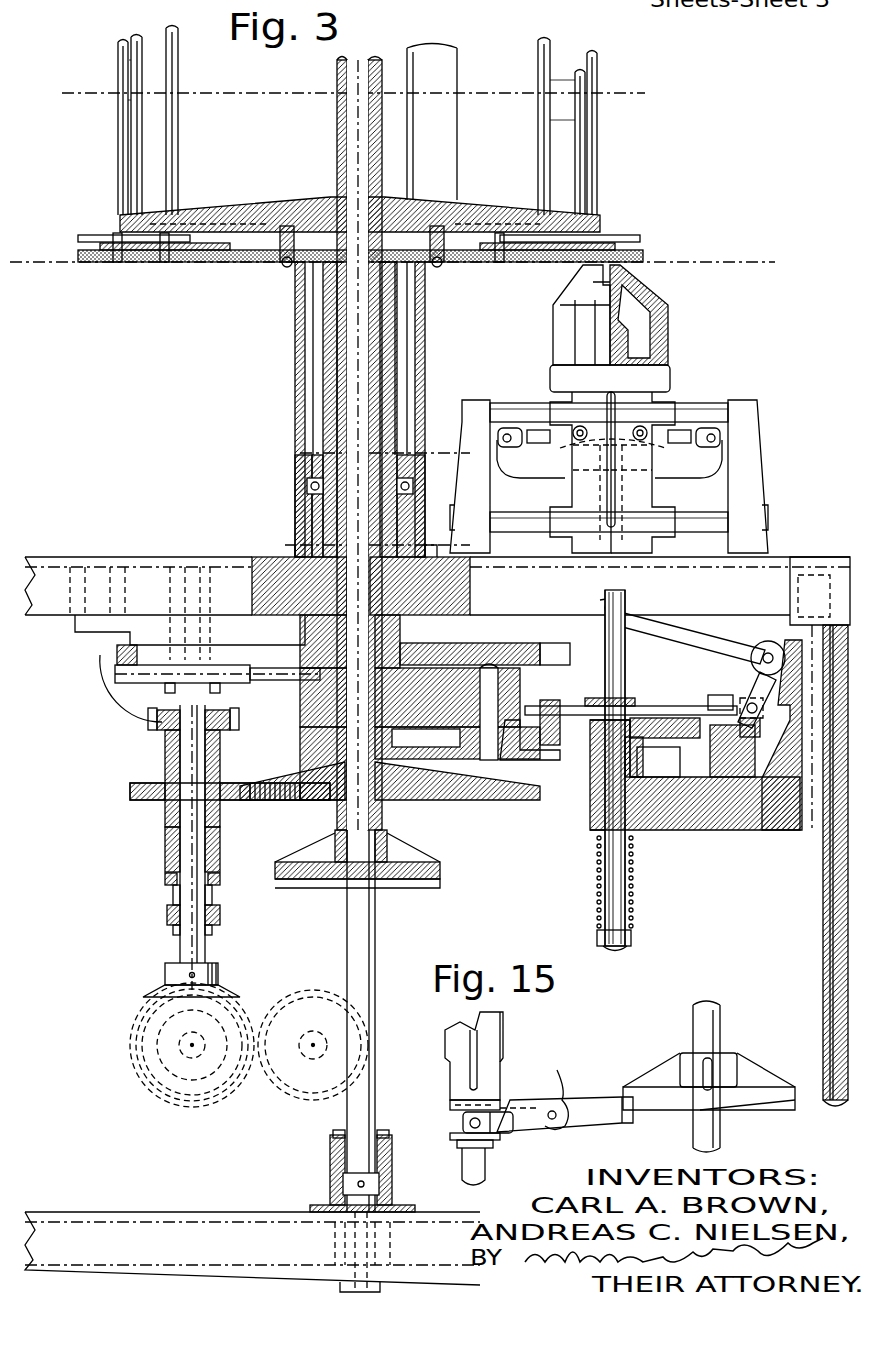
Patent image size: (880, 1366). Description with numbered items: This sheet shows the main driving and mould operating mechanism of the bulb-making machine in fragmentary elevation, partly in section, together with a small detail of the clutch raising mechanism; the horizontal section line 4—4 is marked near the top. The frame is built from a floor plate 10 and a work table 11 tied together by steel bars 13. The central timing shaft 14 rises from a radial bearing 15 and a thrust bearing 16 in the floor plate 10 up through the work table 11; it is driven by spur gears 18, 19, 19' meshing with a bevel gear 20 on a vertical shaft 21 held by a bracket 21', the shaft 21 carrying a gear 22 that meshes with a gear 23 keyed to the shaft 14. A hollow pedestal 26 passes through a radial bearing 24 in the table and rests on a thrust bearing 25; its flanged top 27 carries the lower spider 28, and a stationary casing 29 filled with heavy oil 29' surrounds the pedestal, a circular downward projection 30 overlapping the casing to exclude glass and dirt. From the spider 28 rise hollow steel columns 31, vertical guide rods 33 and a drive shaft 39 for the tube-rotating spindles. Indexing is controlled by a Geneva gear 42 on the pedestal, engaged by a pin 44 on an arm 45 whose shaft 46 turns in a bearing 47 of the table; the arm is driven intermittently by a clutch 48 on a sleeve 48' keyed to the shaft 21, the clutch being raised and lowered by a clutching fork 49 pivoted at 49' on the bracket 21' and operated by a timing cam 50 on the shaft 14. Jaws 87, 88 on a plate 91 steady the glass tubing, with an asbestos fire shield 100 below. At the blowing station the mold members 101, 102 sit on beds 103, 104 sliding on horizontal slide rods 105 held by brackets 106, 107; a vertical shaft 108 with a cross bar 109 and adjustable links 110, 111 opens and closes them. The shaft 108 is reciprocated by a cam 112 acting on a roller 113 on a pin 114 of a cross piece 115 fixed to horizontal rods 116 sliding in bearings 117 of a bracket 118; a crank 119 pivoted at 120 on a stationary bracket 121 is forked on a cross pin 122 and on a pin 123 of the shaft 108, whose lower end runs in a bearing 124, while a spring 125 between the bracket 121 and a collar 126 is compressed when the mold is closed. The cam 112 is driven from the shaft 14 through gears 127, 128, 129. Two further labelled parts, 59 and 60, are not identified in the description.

In FIG. 3, the section line 4 is at (355, 93).
In FIG. 3, the floor plate 10 is at (232, 1212).
In FIG. 3, the work table 11 is at (228, 557).
In FIG. 3, the steel bars 13 is at (832, 540).
In FIG. 3, the central timing shaft 14 is at (376, 1106).
In FIG. 15, the central timing shaft 14 is at (693, 1033).
In FIG. 3, the radial bearing 15 is at (405, 1210).
In FIG. 3, the thrust bearing 16 is at (332, 1200).
In FIG. 3, the spur gear 18 is at (310, 990).
In FIG. 3, the spur gear 19 is at (199, 1035).
In FIG. 3, the spur gear 19' is at (163, 1045).
In FIG. 3, the bevel gear 20 is at (150, 985).
In FIG. 3, the vertical shaft 21 is at (204, 847).
In FIG. 15, the vertical shaft 21 is at (486, 1159).
In FIG. 15, the bracket 21' is at (457, 1061).
In FIG. 3, the gear 22 is at (130, 793).
In FIG. 3, the gear 23 is at (278, 801).
In FIG. 3, the radial bearing 24 is at (300, 510).
In FIG. 3, the thrust bearing 25 is at (306, 486).
In FIG. 3, the hollow pedestal 26 is at (305, 430).
In FIG. 3, the flanged top 27 is at (290, 264).
In FIG. 3, the lower spider 28 is at (298, 200).
In FIG. 3, the stationary casing 29 is at (387, 409).
In FIG. 3, the heavy oil 29' is at (430, 358).
In FIG. 3, the circular downward projection 30 is at (440, 264).
In FIG. 3, the hollow steel columns 31 is at (455, 152).
In FIG. 3, the vertical rods 33 is at (118, 168).
In FIG. 3, the drive shaft 39 is at (140, 42).
In FIG. 3, the Geneva gear 42 is at (540, 656).
In FIG. 3, the pin 44 is at (115, 668).
In FIG. 3, the arm 45 is at (120, 708).
In FIG. 3, the shaft 46 is at (195, 556).
In FIG. 3, the bearing 47 is at (175, 556).
In FIG. 3, the clutch 48 is at (175, 729).
In FIG. 3, the sleeve 48' is at (171, 778).
In FIG. 15, the sleeve 48' is at (465, 1118).
In FIG. 15, the clutching fork 49 is at (565, 1098).
In FIG. 15, the pivot 49' is at (535, 1084).
In FIG. 3, the timing cam 50 is at (300, 880).
In FIG. 15, the timing cam 50 is at (775, 1112).
In FIG. 3, the hollow shaft 59 is at (337, 137).
In FIG. 3, the cam block 60 is at (275, 716).
In FIG. 3, the jaw 87 is at (640, 238).
In FIG. 3, the jaw 88 is at (95, 237).
In FIG. 3, the plate 91 is at (140, 265).
In FIG. 3, the asbestos fire shield 100 is at (98, 263).
In FIG. 3, the mold member 101 is at (565, 300).
In FIG. 3, the mold member 102 is at (655, 300).
In FIG. 3, the bed 103 is at (552, 384).
In FIG. 3, the bed 104 is at (652, 384).
In FIG. 3, the horizontal slide rods 105 is at (722, 408).
In FIG. 3, the bracket 106 is at (466, 455).
In FIG. 3, the bracket 107 is at (752, 470).
In FIG. 3, the vertical shaft 108 is at (626, 680).
In FIG. 3, the cross bar 109 is at (508, 460).
In FIG. 3, the adjustable link 110 is at (518, 428).
In FIG. 3, the adjustable link 111 is at (702, 428).
In FIG. 3, the cam 112 is at (660, 718).
In FIG. 3, the roller 113 is at (560, 716).
In FIG. 3, the pin 114 is at (540, 702).
In FIG. 3, the cross piece 115 is at (545, 752).
In FIG. 3, the horizontal rods 116 is at (645, 704).
In FIG. 3, the bearings 117 is at (715, 695).
In FIG. 3, the bracket 118 is at (712, 757).
In FIG. 3, the crank 119 is at (725, 632).
In FIG. 3, the pivot 120 is at (768, 641).
In FIG. 3, the stationary bracket 121 is at (775, 830).
In FIG. 3, the cross pin 122 is at (755, 735).
In FIG. 3, the pin 123 is at (605, 606).
In FIG. 3, the bearing 124 is at (590, 830).
In FIG. 3, the spring 125 is at (597, 880).
In FIG. 3, the collar 126 is at (632, 940).
In FIG. 3, the gear 127 is at (305, 768).
In FIG. 3, the gear 128 is at (447, 756).
In FIG. 3, the gear 129 is at (650, 756).